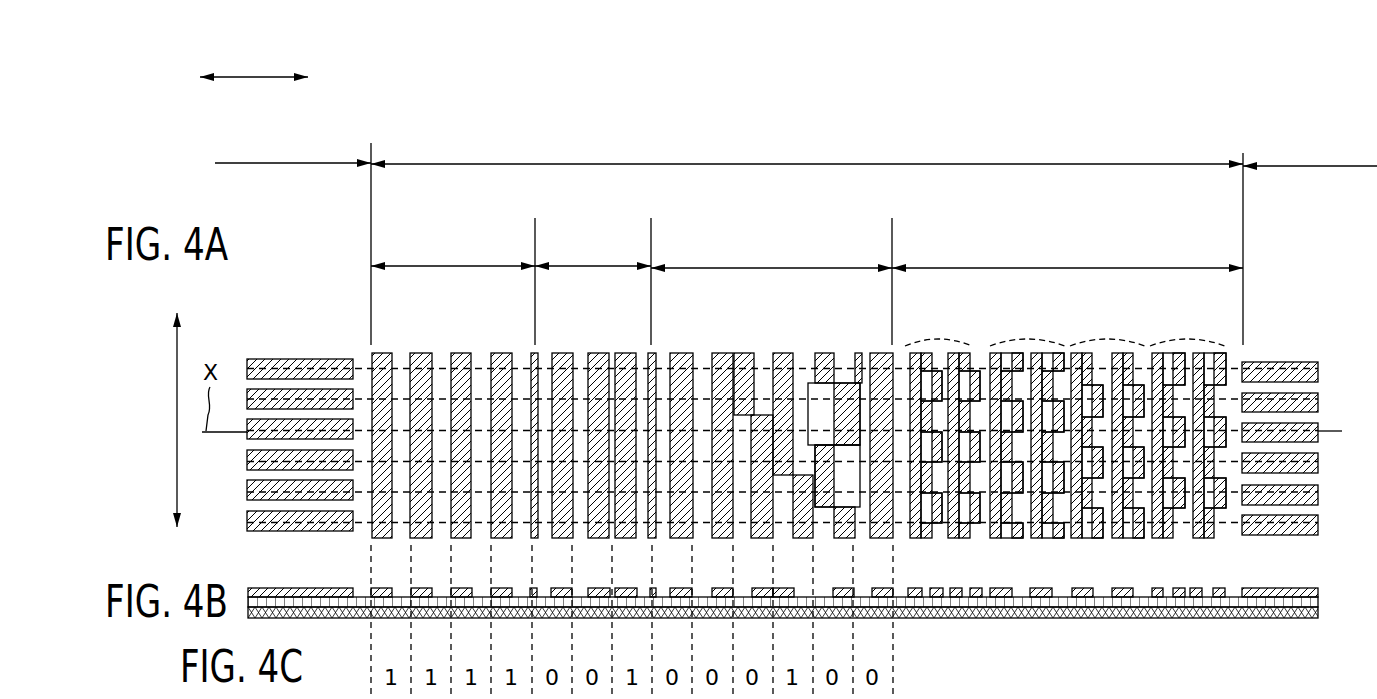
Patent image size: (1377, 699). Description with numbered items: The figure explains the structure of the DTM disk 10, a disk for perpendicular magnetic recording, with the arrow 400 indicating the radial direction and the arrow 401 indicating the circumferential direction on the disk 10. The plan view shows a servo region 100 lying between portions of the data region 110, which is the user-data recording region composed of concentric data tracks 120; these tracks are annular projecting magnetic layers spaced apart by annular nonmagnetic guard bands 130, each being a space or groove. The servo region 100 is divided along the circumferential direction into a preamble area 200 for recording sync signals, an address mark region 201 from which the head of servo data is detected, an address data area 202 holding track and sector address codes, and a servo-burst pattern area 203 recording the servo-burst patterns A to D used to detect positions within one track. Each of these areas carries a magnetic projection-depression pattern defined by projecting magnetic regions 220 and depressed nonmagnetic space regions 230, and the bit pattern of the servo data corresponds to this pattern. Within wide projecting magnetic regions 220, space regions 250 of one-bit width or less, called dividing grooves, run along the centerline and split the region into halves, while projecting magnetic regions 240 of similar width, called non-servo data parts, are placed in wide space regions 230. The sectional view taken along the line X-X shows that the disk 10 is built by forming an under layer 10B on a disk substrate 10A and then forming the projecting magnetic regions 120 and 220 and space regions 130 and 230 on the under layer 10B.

In FIG. 4B, the DTM disk 10 is at (783, 635).
In FIG. 4B, the disk substrate 10A is at (1030, 620).
In FIG. 4B, the under layer 10B is at (1115, 612).
In FIG. 4A, the servo region 100 is at (807, 148).
In FIG. 4A, the data region 110 is at (796, 133).
In FIG. 4A, the data track 120 is at (340, 358).
In FIG. 4B, the data track 120 is at (288, 588).
In FIG. 4A, the guard band 130 is at (246, 378).
In FIG. 4A, the preamble area 200 is at (453, 239).
In FIG. 4A, the address mark region 201 is at (593, 224).
In FIG. 4A, the address data area 202 is at (771, 251).
In FIG. 4A, the servo-burst pattern area 203 is at (1067, 386).
In FIG. 4A, the projecting magnetic region 220 is at (384, 352).
In FIG. 4B, the projecting magnetic region 220 is at (378, 588).
In FIG. 4A, the space region 230 is at (402, 352).
In FIG. 4B, the space region 230 is at (366, 614).
In FIG. 4A, the non-servo data part 240 is at (532, 352).
In FIG. 4B, the non-servo data part 240 is at (535, 588).
In FIG. 4A, the dividing groove 250 is at (612, 352).
In FIG. 4B, the dividing groove 250 is at (617, 588).
In FIG. 4A, the radial direction arrow 400 is at (179, 457).
In FIG. 4A, the circumferential direction arrow 401 is at (251, 75).